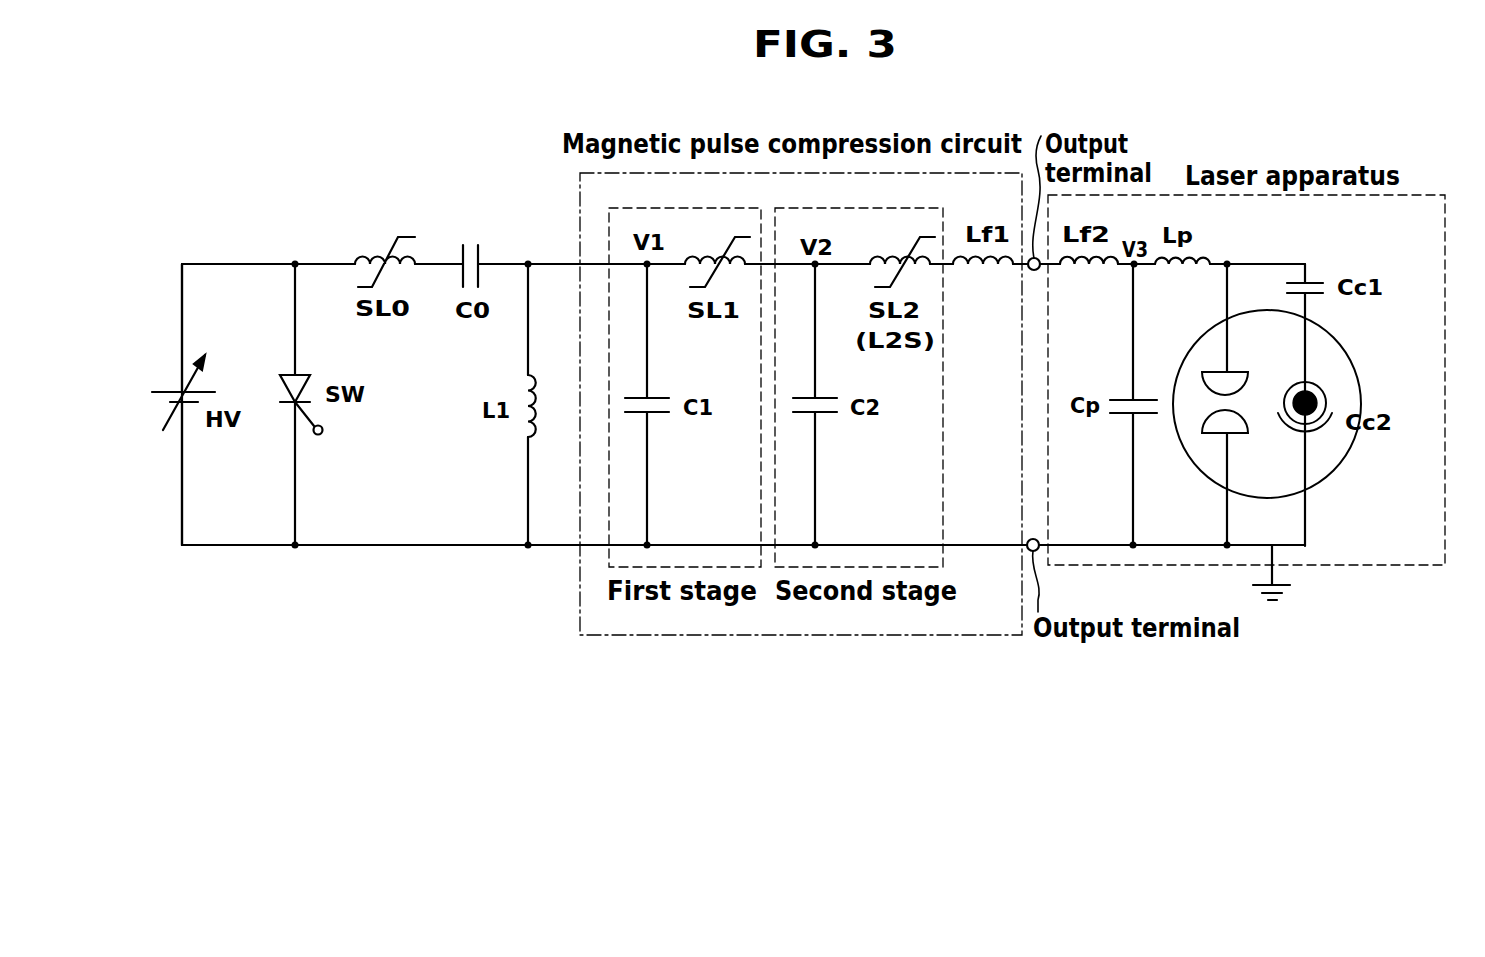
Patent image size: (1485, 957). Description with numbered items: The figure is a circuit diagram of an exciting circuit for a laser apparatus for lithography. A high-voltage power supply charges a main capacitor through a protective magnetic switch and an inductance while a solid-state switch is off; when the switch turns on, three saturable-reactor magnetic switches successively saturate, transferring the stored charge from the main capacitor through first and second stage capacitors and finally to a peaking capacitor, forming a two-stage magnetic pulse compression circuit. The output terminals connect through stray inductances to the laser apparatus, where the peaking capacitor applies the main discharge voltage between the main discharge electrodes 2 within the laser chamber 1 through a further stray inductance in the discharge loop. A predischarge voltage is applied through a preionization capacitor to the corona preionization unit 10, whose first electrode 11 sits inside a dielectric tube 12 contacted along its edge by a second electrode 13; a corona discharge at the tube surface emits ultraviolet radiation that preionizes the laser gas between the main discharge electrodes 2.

The laser chamber 1 is at (1333, 330).
The main discharge electrodes 2 is at (1247, 389).
The corona preionization unit 10 is at (1358, 382).
The first electrode 11 is at (1313, 392).
The dielectric tube 12 is at (1298, 383).
The second electrode 13 is at (1327, 427).